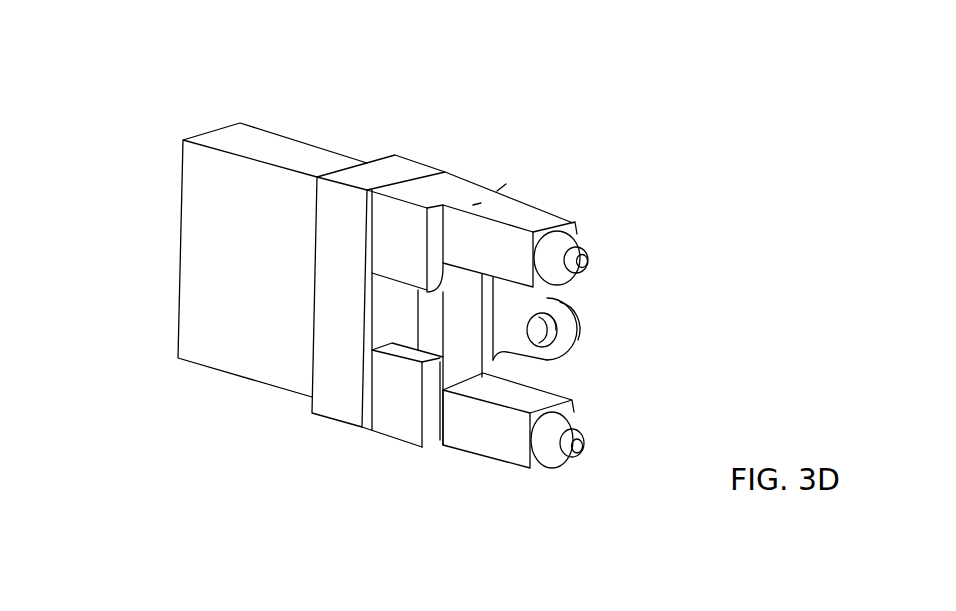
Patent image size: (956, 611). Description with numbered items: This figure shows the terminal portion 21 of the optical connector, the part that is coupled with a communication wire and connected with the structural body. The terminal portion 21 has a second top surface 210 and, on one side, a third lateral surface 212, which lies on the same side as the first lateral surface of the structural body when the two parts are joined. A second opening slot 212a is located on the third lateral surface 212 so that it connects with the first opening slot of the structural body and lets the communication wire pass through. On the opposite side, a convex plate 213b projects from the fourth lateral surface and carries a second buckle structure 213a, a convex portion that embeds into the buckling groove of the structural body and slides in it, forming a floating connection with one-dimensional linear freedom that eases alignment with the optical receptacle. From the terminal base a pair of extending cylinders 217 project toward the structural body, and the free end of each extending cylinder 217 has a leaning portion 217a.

The terminal portion 21 is at (415, 108).
The second top surface 210 is at (447, 188).
The third lateral surface 212 is at (332, 242).
The second opening slot 212a is at (407, 295).
The second buckle structure 213a is at (542, 332).
The convex plate 213b is at (507, 313).
The extending cylinder 217 is at (475, 438).
The leaning portion 217a is at (533, 462).